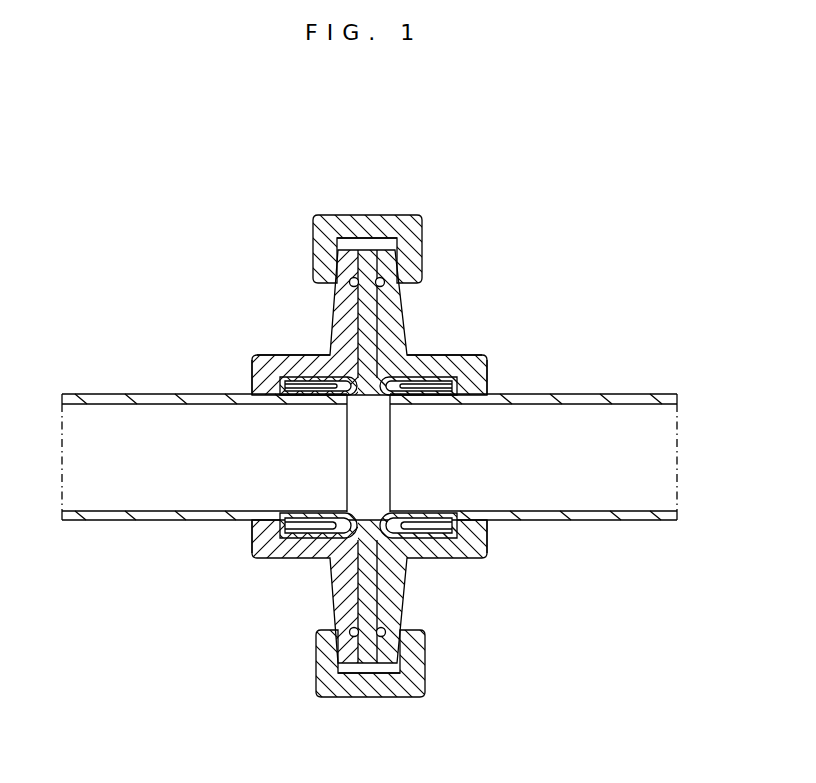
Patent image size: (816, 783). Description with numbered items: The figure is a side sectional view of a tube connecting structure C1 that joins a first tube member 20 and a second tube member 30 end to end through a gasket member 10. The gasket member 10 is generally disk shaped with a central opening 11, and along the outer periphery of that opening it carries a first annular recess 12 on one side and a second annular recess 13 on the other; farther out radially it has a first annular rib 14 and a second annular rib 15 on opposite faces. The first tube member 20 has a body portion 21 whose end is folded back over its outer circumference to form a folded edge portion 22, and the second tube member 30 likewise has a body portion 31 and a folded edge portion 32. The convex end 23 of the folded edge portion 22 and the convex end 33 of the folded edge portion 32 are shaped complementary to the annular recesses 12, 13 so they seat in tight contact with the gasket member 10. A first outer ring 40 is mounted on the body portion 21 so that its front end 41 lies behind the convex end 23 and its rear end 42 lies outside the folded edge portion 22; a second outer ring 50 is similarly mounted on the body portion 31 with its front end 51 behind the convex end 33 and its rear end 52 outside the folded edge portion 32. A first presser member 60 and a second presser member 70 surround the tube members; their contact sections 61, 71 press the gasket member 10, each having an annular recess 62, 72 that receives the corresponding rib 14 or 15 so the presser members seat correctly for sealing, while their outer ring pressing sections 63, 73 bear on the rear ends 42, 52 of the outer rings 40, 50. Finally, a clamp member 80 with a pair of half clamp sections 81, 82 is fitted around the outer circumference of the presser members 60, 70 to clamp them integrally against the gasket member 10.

The gasket member 10 is at (333, 217).
The central opening 11 is at (370, 455).
The first annular recess 12 is at (437, 357).
The second annular recess 13 is at (330, 548).
The first annular rib 14 is at (393, 297).
The second annular rib 15 is at (353, 283).
The first tube member 20 is at (643, 392).
The body portion of first tube member 21 is at (590, 513).
The folded edge portion of first tube member 22 is at (412, 535).
The convex end of first folded edge portion 23 is at (370, 505).
The second tube member 30 is at (112, 395).
The body portion of second tube member 31 is at (113, 515).
The folded edge portion of second tube member 32 is at (307, 377).
The convex end of second folded edge portion 33 is at (362, 405).
The first outer ring 40 is at (453, 540).
The front end of first outer ring 41 is at (390, 397).
The rear end of first outer ring 42 is at (487, 370).
The second outer ring 50 is at (257, 363).
The front end of second outer ring 51 is at (348, 525).
The rear end of second outer ring 52 is at (257, 548).
The first presser member 60 is at (487, 547).
The contact section of first presser member 61 is at (398, 325).
The annular recess of first presser member 62 is at (378, 287).
The outer ring pressing section of first presser member 63 is at (460, 530).
The second presser member 70 is at (250, 362).
The contact section of second presser member 71 is at (348, 598).
The annular recess of second presser member 72 is at (360, 628).
The outer ring pressing section of second presser member 73 is at (280, 387).
The clamp member 80 is at (407, 215).
The half clamp section 81 is at (365, 220).
The half clamp section 82 is at (368, 697).
The connecting structure C1 is at (436, 218).